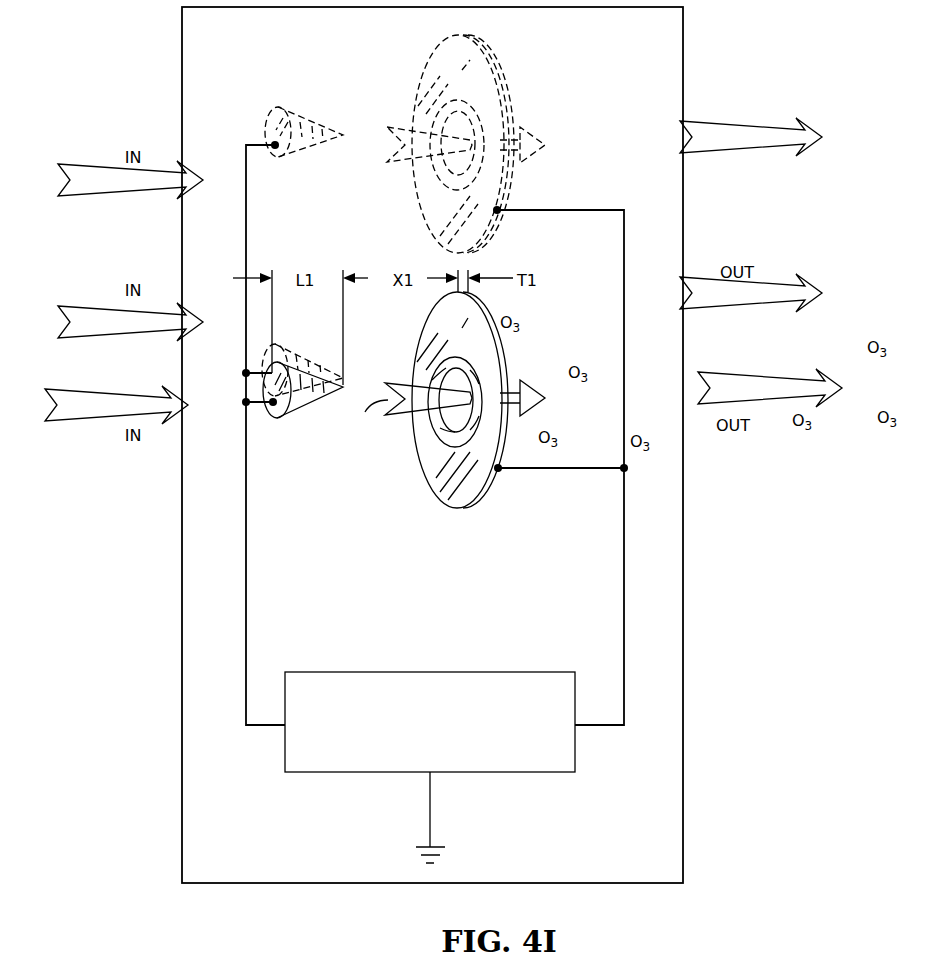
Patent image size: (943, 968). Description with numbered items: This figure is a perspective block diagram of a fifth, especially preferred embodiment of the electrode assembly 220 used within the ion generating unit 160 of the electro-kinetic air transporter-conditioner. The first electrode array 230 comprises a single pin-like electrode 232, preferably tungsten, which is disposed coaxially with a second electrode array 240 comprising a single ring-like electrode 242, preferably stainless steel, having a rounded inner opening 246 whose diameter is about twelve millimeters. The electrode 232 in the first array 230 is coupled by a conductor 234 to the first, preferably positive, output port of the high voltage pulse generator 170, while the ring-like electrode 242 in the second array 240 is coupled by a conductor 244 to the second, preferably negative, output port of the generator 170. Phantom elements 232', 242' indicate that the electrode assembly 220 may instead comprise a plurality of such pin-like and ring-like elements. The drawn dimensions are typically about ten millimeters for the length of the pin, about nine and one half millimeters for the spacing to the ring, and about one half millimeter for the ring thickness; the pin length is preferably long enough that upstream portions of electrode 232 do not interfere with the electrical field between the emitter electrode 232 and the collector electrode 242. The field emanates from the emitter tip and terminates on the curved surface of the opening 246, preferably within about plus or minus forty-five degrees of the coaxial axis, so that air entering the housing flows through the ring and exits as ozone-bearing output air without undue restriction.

The ion generating unit 160 is at (683, 237).
The high voltage pulse generator 170 is at (448, 670).
The electrode assembly 220 is at (430, 572).
The first array 230 is at (308, 507).
The pin-like electrode 232 is at (303, 407).
The phantom pin-like element 232' is at (302, 236).
The conductor 234 is at (246, 622).
The second array 240 is at (618, 180).
The ring-like electrode 242 is at (460, 424).
The phantom ring-like element 242' is at (473, 144).
The conductor 244 is at (624, 622).
The rounded inner opening 246 is at (446, 357).